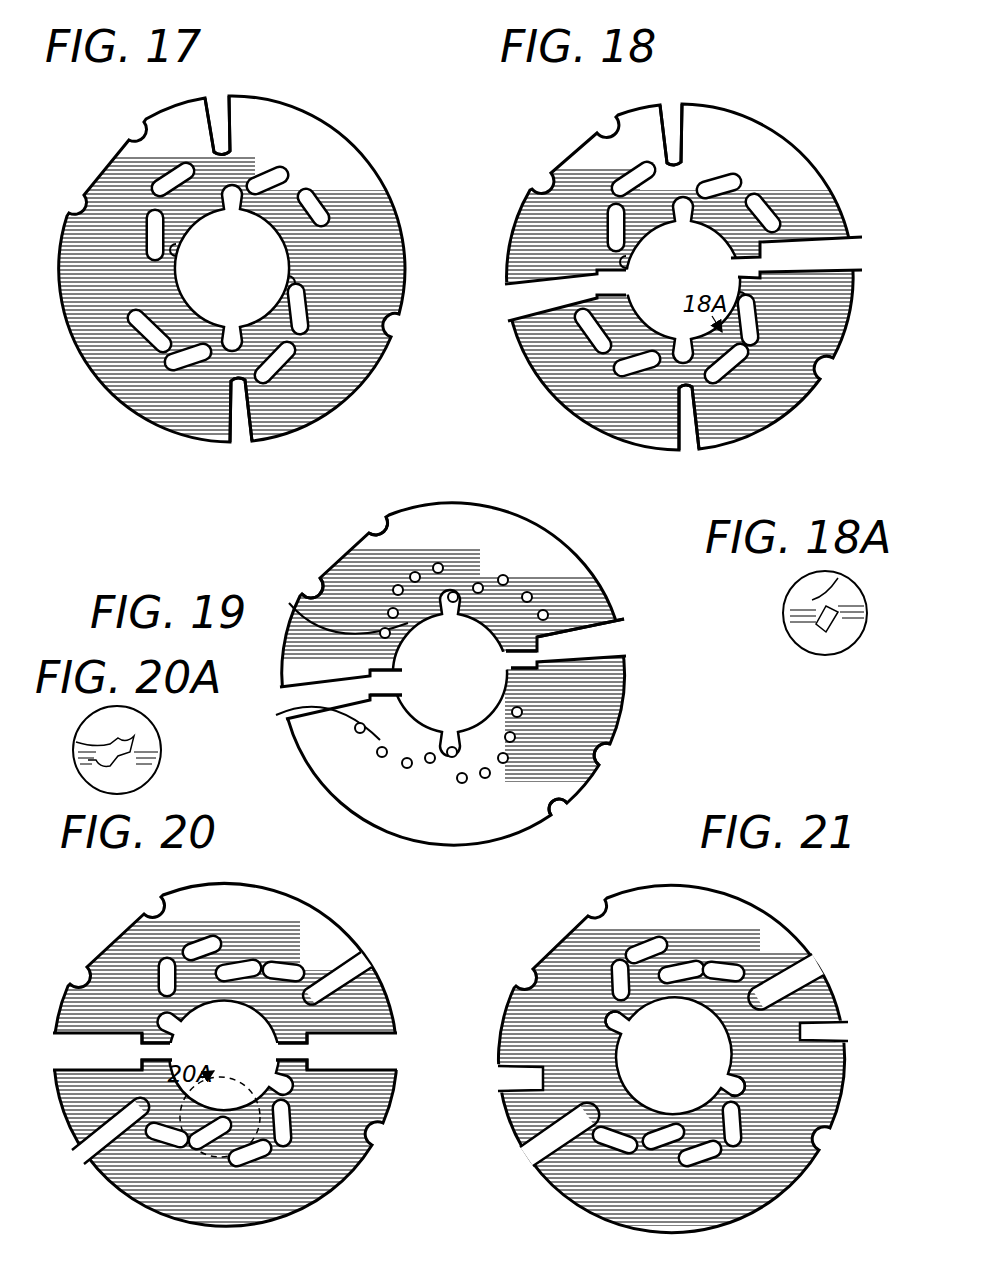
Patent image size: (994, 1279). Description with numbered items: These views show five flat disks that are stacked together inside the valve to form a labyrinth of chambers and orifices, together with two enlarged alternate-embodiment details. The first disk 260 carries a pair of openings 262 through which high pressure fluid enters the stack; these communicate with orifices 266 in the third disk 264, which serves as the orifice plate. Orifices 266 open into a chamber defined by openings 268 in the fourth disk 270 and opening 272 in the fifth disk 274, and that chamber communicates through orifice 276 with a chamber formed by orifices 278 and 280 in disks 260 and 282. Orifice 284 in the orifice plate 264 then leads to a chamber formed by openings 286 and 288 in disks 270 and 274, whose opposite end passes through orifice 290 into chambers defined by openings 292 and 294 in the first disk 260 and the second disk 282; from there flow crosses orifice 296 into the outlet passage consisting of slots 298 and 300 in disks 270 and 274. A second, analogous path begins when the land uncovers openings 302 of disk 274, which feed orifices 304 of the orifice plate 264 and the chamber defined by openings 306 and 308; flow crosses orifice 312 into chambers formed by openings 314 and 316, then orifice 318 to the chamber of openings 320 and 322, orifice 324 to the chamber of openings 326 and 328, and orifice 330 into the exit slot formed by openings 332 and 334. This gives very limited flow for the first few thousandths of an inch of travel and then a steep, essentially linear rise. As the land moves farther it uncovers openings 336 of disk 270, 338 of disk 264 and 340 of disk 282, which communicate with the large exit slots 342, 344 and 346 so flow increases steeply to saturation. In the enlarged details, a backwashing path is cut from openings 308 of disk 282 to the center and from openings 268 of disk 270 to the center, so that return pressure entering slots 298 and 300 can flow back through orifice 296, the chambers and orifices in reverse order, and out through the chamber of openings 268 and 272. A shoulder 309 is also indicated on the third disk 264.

In FIG. 17, the first disk 260 is at (378, 164).
In FIG. 17, the openings 262 is at (232, 206).
In FIG. 17, the orifice 278 is at (280, 170).
In FIG. 17, the openings 292 is at (318, 213).
In FIG. 17, the openings 306 is at (178, 250).
In FIG. 17, the openings 320 is at (168, 172).
In FIG. 17, the opening 332 is at (219, 128).
In FIG. 18, the second disk 282 is at (790, 126).
In FIG. 18, the orifice 280 is at (722, 182).
In FIG. 18, the openings 294 is at (770, 216).
In FIG. 18, the openings 308 is at (628, 256).
In FIG. 18A, the openings 308 is at (826, 642).
In FIG. 18, the openings 322 is at (623, 178).
In FIG. 18, the opening 334 is at (675, 130).
In FIG. 18, the openings 340 is at (742, 262).
In FIG. 18, the exit slot 346 is at (808, 262).
In FIG. 19, the third disk 264 is at (549, 528).
In FIG. 19, the orifices 266 is at (458, 608).
In FIG. 19, the orifice 276 is at (478, 583).
In FIG. 19, the orifice 284 is at (506, 576).
In FIG. 19, the orifice 290 is at (530, 594).
In FIG. 19, the orifice 296 is at (548, 614).
In FIG. 19, the orifices 304 is at (350, 634).
In FIG. 19, the shoulder 309 is at (625, 661).
In FIG. 19, the orifice 312 is at (310, 588).
In FIG. 19, the orifice 318 is at (375, 530).
In FIG. 19, the orifice 324 is at (395, 586).
In FIG. 19, the orifice 330 is at (438, 563).
In FIG. 19, the openings 338 is at (522, 662).
In FIG. 19, the exit slot 344 is at (575, 657).
In FIG. 20A, the openings 268 is at (135, 748).
In FIG. 20, the openings 268 is at (240, 994).
In FIG. 20, the fourth disk 270 is at (341, 919).
In FIG. 20, the openings 286 is at (284, 963).
In FIG. 20, the slot 298 is at (364, 960).
In FIG. 20, the openings 314 is at (167, 960).
In FIG. 20, the openings 326 is at (202, 945).
In FIG. 20, the openings 336 is at (165, 1053).
In FIG. 20, the exit slot 342 is at (112, 1036).
In FIG. 21, the opening 272 is at (705, 999).
In FIG. 21, the fifth disk 274 is at (741, 901).
In FIG. 21, the openings 288 is at (728, 962).
In FIG. 21, the slot 300 is at (815, 962).
In FIG. 21, the openings 302 is at (617, 1032).
In FIG. 21, the openings 316 is at (620, 963).
In FIG. 21, the openings 328 is at (647, 946).